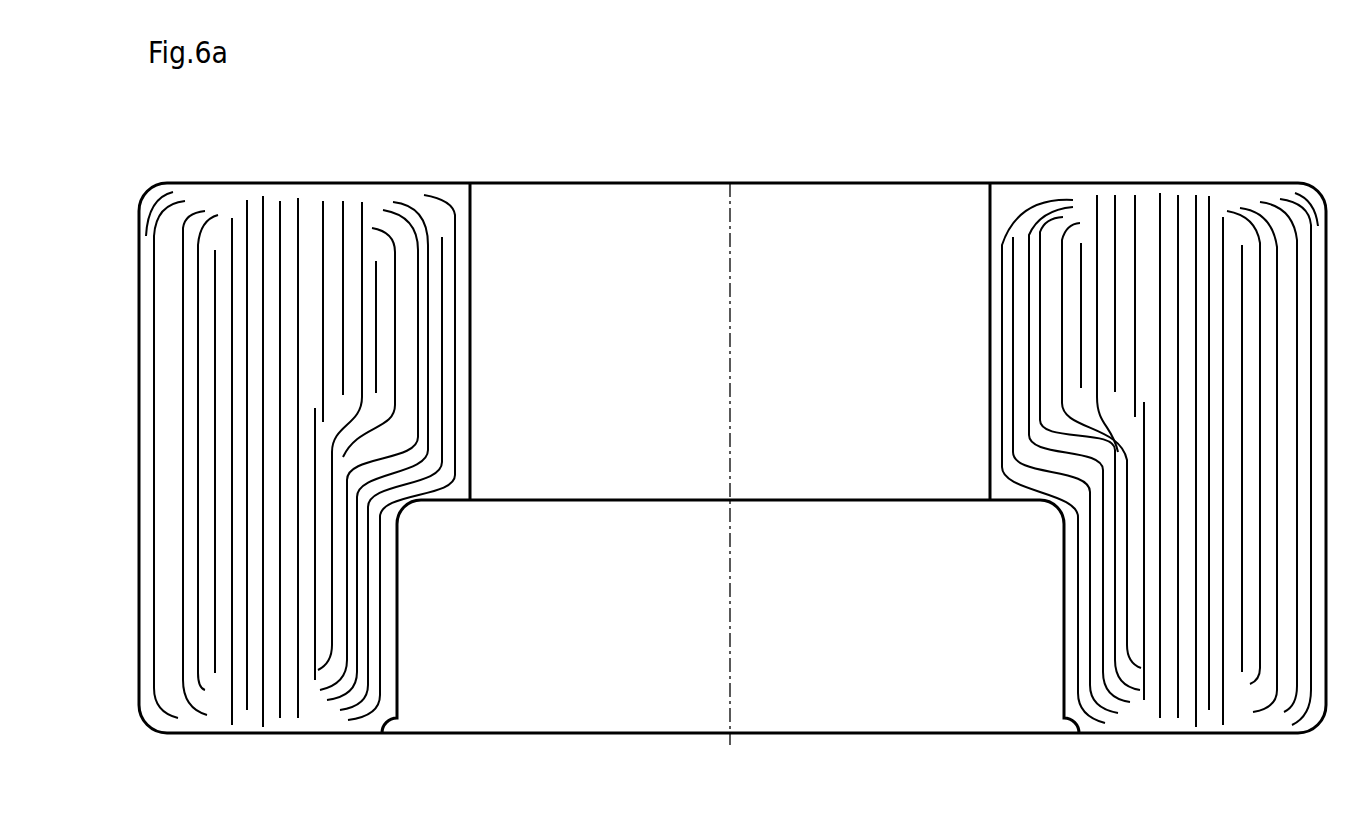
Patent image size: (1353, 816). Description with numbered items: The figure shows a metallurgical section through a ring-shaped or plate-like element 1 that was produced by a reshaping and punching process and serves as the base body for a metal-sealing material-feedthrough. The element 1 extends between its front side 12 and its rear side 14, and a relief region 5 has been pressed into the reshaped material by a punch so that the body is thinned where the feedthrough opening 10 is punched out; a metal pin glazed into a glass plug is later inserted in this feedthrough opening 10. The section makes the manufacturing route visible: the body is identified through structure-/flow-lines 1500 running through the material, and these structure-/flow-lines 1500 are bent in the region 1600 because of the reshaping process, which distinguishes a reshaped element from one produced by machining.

The ring-shaped or plate-like element 1 is at (802, 158).
The relief region 5 is at (588, 697).
The feedthrough opening 10 is at (595, 213).
The front side 12 is at (262, 181).
The rear side 14 is at (251, 733).
The structure-/flow-lines 1500 is at (1000, 360).
The region 1600 is at (1036, 194).